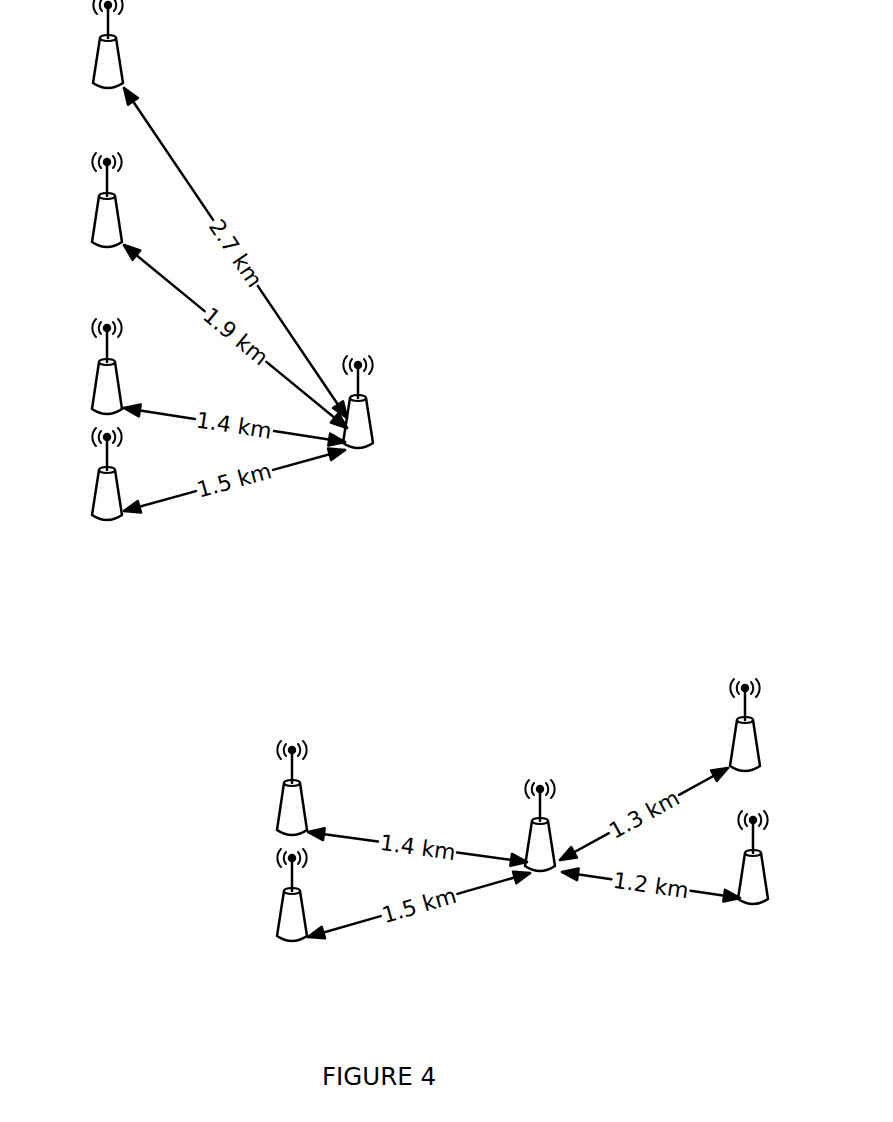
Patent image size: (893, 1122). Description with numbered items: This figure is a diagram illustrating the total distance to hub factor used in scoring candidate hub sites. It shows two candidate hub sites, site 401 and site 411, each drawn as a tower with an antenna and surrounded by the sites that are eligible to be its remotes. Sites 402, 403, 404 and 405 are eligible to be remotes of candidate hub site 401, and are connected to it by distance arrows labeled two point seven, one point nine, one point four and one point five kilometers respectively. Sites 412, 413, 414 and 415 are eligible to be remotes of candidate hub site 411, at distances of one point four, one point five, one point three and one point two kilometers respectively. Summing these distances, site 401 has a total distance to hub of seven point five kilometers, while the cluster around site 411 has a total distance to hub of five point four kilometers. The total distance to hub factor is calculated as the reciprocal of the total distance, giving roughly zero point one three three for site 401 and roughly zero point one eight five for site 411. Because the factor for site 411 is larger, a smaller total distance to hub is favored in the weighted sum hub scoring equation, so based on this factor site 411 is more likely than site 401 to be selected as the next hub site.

The candidate hub site 401 is at (369, 416).
The site 402 is at (99, 47).
The site 403 is at (99, 205).
The site 404 is at (99, 370).
The site 405 is at (99, 485).
The candidate hub site 411 is at (531, 832).
The site 412 is at (282, 804).
The site 413 is at (282, 912).
The site 414 is at (757, 748).
The site 415 is at (766, 881).